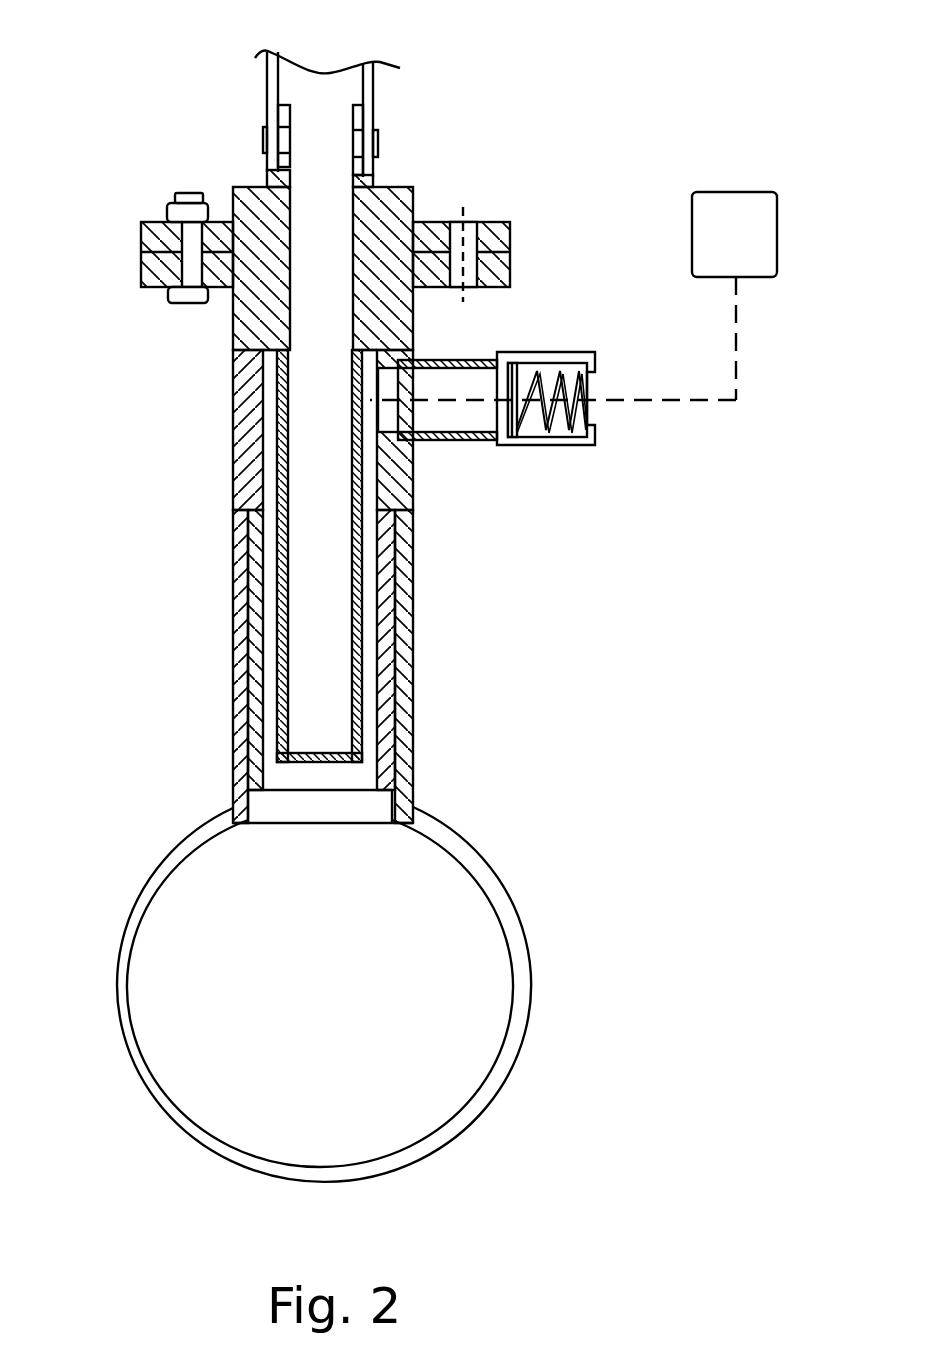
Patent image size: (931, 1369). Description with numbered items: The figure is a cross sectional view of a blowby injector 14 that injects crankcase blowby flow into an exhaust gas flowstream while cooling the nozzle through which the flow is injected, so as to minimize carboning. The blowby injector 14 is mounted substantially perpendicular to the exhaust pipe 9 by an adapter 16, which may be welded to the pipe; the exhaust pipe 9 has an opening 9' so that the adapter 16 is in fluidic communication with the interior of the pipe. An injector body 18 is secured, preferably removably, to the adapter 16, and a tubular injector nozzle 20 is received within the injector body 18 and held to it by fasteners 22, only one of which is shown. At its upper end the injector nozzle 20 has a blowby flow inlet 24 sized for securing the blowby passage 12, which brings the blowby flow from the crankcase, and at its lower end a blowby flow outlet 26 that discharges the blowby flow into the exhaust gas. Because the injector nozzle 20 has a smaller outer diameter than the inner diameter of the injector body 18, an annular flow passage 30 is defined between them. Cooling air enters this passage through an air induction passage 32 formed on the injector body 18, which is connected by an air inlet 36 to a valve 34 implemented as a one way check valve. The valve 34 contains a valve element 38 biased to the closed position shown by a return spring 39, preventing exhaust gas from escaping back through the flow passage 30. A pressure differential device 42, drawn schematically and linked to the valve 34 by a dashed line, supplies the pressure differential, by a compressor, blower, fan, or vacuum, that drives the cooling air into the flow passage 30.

The exhaust pipe 9 is at (335, 994).
The opening 9' is at (318, 846).
The blowby passage 12 is at (272, 80).
The blowby injector 14 is at (519, 70).
The adapter 16 is at (242, 705).
The injector body 18 is at (250, 470).
The injector nozzle 20 is at (358, 626).
The fasteners 22 is at (182, 240).
The blowby flow inlet 24 is at (372, 140).
The blowby flow outlet 26 is at (283, 760).
The flow passage 30 is at (268, 492).
The air induction passage 32 is at (412, 440).
The valve 34 is at (566, 446).
The air inlet 36 is at (468, 358).
The valve element 38 is at (500, 438).
The return spring 39 is at (563, 368).
The pressure differential device 42 is at (731, 208).